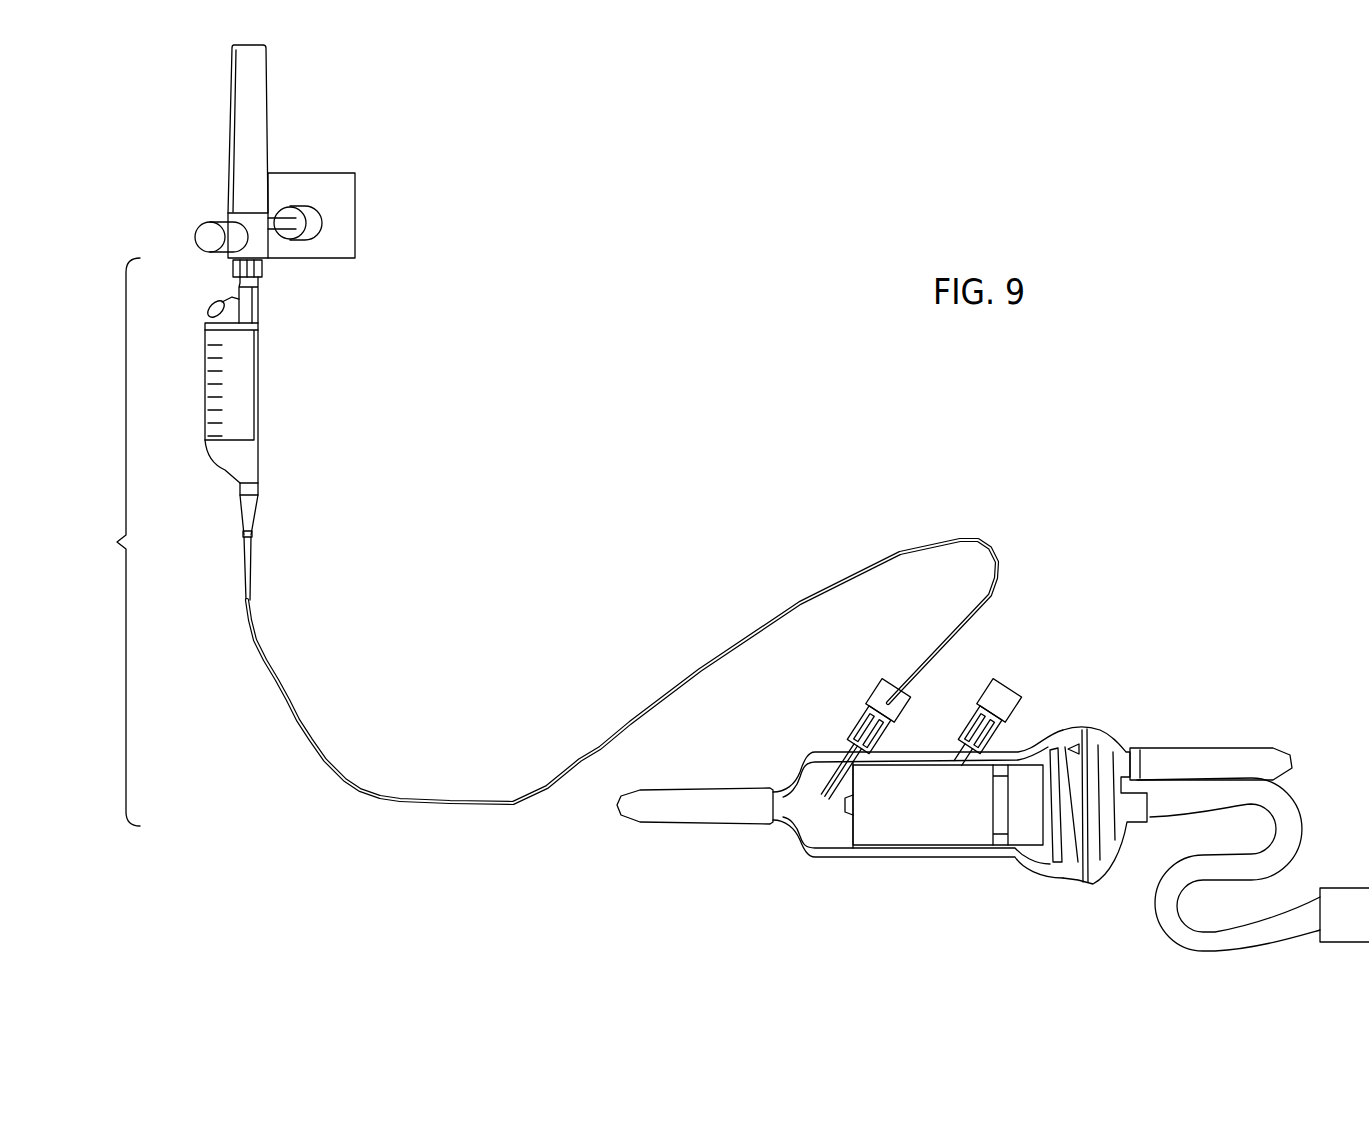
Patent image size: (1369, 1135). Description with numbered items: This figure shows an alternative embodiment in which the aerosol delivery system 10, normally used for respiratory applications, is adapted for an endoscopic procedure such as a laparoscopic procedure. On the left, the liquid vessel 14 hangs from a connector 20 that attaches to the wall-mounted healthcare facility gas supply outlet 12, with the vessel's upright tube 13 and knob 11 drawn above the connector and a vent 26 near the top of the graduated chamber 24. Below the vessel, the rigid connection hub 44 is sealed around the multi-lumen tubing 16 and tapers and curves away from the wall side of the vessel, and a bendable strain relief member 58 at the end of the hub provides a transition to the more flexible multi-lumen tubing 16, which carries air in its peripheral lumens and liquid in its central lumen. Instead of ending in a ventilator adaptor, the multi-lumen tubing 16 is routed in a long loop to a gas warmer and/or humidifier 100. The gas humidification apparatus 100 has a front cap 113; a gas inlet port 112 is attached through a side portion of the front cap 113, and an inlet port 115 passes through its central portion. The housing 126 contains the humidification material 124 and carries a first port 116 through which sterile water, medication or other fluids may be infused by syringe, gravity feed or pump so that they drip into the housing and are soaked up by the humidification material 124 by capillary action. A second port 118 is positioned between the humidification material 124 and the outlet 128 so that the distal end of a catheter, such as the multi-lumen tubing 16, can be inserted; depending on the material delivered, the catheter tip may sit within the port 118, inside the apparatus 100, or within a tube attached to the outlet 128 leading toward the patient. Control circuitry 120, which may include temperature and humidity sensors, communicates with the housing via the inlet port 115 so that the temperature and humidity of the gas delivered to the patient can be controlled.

The system 10 is at (112, 542).
The knob 11 is at (206, 228).
The gas supply outlet 12 is at (362, 183).
The tube 13 is at (258, 82).
The liquid vessel 14 is at (272, 333).
The multi-lumen tubing 16 is at (364, 794).
The connector 20 is at (265, 276).
The graduated chamber 24 is at (260, 386).
The vent 26 is at (211, 303).
The connection hub 44 is at (252, 509).
The strain relief member 58 is at (252, 546).
The gas humidification apparatus 100 is at (1096, 703).
The gas inlet port 112 is at (1125, 746).
The front cap 113 is at (1100, 728).
The inlet port 115 is at (1140, 825).
The first port 116 is at (1000, 700).
The second port 118 is at (873, 690).
The control circuitry 120 is at (1365, 927).
The humidification material 124 is at (878, 836).
The housing 126 is at (925, 860).
The outlet 128 is at (782, 824).